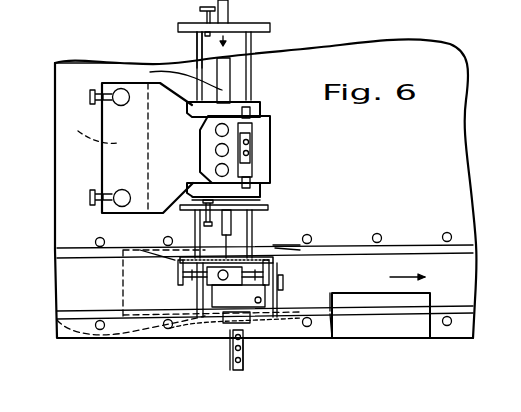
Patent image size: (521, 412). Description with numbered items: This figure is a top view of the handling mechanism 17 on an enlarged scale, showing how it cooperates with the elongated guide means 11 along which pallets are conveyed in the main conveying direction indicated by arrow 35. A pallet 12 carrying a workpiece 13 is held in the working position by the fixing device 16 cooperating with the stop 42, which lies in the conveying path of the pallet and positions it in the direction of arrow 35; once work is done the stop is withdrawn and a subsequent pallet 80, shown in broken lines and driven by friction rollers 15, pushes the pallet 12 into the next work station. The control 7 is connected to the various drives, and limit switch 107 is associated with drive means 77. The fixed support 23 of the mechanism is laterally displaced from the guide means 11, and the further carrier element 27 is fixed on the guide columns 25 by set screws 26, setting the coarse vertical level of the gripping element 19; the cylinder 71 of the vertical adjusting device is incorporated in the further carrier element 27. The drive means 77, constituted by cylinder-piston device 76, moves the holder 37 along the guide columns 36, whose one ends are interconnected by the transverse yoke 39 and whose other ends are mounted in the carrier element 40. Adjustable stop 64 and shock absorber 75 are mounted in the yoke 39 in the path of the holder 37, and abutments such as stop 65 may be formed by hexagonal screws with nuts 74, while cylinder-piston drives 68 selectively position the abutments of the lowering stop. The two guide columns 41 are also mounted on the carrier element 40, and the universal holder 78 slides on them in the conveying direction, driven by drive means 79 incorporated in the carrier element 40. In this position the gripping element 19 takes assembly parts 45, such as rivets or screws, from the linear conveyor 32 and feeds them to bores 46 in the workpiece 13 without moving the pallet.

The control 7 is at (412, 327).
The elongated guide means 11 is at (167, 288).
The pallet 12 is at (272, 300).
The workpiece 13 is at (257, 303).
The friction rollers 15 is at (98, 247).
The fixing device 16 is at (150, 232).
The handling mechanism 17 is at (275, 152).
The gripping element 19 is at (170, 263).
The fixed support 23 is at (88, 125).
The guide columns 25 is at (208, 100).
The set screws 26 is at (90, 97).
The further carrier element 27 is at (112, 175).
The linear conveyor 32 is at (236, 370).
The arrow 35 is at (400, 277).
The guide columns 36 is at (205, 218).
The holder 37 is at (230, 108).
The transverse yoke 39 is at (270, 30).
The carrier element 40 is at (278, 255).
The guide columns 41 is at (332, 320).
The stop 42 is at (284, 283).
The assembly parts 45 is at (245, 372).
The bores 46 is at (242, 350).
The adjustable stop 64 is at (197, 18).
The adjustable stop 65 is at (315, 248).
The cylinder-piston drives 68 is at (250, 113).
The cylinder 71 is at (270, 275).
The nuts 74 is at (202, 21).
The shock absorber 75 is at (229, 12).
The cylinder-piston device 76 is at (150, 72).
The drive means 77 is at (238, 68).
The universal holder 78 is at (225, 320).
The drive means 79 is at (232, 250).
The subsequent pallet 80 is at (65, 332).
The limit switch 107 is at (78, 62).